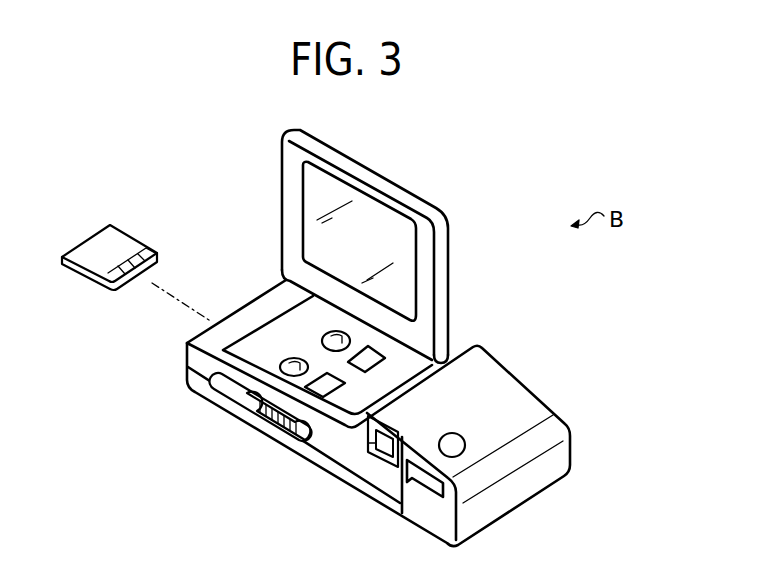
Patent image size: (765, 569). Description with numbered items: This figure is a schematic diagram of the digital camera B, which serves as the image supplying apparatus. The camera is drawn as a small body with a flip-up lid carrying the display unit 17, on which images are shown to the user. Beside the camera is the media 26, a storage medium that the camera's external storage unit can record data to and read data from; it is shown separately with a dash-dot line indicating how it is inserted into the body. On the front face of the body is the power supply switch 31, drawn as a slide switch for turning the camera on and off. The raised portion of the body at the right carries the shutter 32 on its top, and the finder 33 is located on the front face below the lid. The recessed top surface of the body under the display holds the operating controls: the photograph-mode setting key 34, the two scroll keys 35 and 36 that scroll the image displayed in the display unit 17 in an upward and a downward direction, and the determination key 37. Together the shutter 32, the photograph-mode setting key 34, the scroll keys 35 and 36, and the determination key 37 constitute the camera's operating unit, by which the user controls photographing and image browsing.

The display unit 17 is at (366, 208).
The media 26 is at (115, 237).
The power supply switch 31 is at (275, 416).
The shutter 32 is at (465, 448).
The finder 33 is at (385, 451).
The photograph-mode setting key 34 is at (370, 354).
The scroll key 35 is at (333, 333).
The scroll key 36 is at (290, 359).
The determination key 37 is at (321, 393).